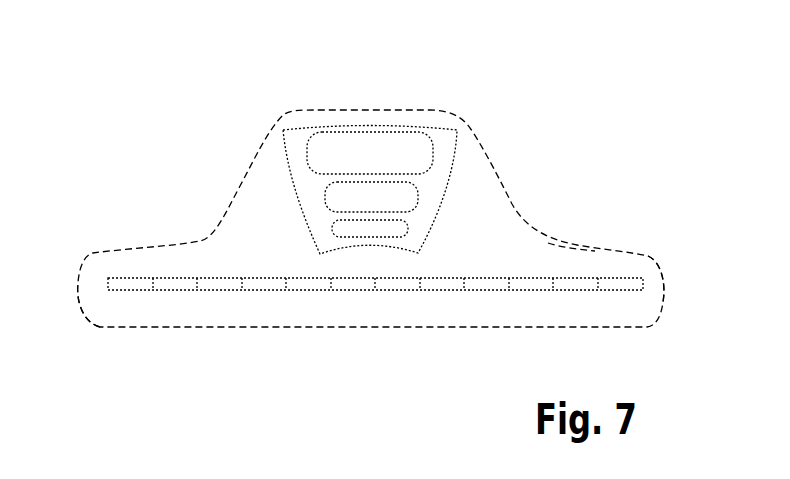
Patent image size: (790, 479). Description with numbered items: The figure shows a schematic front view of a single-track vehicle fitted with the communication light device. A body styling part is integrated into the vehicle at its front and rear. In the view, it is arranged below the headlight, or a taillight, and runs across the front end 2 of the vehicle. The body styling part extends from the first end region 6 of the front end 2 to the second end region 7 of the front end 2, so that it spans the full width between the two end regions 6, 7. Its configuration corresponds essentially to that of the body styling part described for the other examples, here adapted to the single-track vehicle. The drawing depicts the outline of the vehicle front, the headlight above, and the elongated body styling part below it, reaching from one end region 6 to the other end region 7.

The front end 2 is at (562, 258).
The first end region 6 is at (108, 310).
The second end region 7 is at (650, 300).